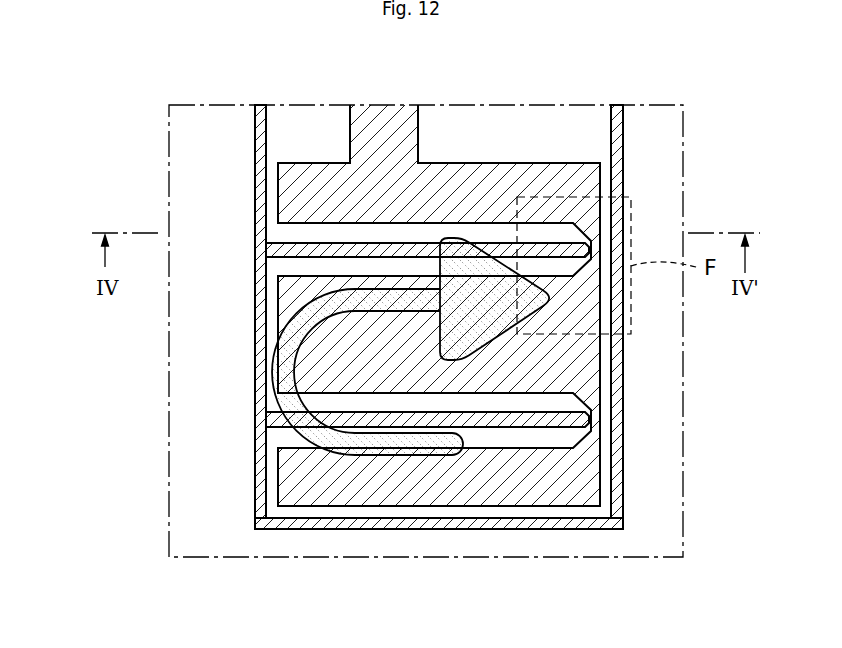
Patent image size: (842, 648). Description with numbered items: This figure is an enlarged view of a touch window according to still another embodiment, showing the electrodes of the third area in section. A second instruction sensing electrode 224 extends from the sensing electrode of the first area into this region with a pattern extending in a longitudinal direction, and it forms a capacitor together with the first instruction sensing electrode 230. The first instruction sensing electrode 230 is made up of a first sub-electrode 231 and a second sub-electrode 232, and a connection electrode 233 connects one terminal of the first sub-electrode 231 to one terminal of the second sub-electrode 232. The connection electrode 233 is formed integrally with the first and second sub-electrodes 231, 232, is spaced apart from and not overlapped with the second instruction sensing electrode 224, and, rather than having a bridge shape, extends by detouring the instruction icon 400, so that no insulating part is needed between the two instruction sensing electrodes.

The second instruction sensing electrode 224 is at (381, 105).
The first instruction sensing electrode 230 is at (334, 311).
The first sub-electrode 231 is at (256, 325).
The second sub-electrode 232 is at (617, 378).
The connection electrode 233 is at (523, 527).
The instruction icon 400 is at (374, 453).